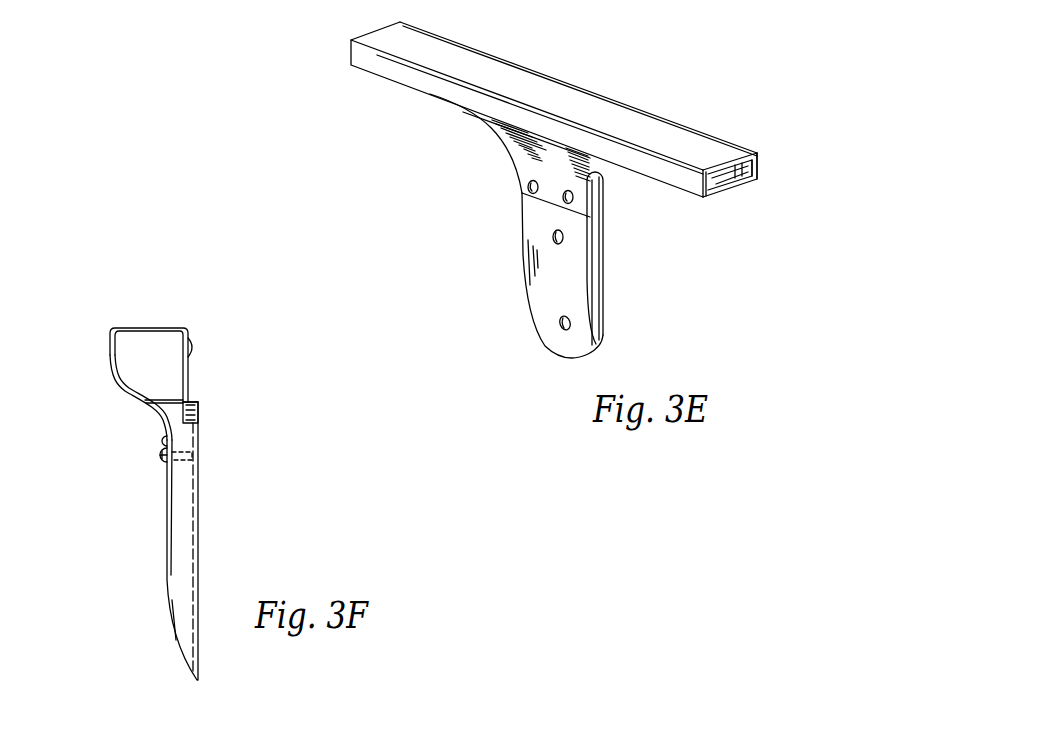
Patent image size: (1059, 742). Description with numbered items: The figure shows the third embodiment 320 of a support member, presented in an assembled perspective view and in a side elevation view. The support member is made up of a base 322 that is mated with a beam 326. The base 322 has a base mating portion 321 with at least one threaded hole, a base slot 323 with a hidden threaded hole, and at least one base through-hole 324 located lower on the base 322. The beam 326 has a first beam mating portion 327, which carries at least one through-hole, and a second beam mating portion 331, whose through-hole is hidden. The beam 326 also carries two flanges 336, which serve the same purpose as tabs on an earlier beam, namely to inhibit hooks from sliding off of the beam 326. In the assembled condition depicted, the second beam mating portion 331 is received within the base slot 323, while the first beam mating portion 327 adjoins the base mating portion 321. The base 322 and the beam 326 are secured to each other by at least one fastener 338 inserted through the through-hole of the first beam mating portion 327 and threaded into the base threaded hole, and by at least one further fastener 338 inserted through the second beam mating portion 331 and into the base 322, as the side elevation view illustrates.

In FIG. 3E, the third embodiment of a support member 320 is at (386, 153).
In FIG. 3F, the base mating portion 321 is at (174, 447).
In FIG. 3E, the base 322 is at (605, 272).
In FIG. 3F, the base 322 is at (199, 537).
In FIG. 3E, the base slot 323 is at (601, 212).
In FIG. 3F, the base slot 323 is at (199, 418).
In FIG. 3E, the base through-hole 324 is at (571, 318).
In FIG. 3E, the beam 326 is at (570, 90).
In FIG. 3F, the beam 326 is at (110, 352).
In FIG. 3E, the first beam mating portion 327 is at (527, 162).
In FIG. 3F, the first beam mating portion 327 is at (160, 418).
In FIG. 3E, the second beam mating portion 331 is at (602, 176).
In FIG. 3F, the second beam mating portion 331 is at (199, 402).
In FIG. 3E, the flanges 336 is at (760, 172).
In FIG. 3F, the flanges 336 is at (194, 348).
In FIG. 3E, the fastener 338 is at (568, 205).
In FIG. 3F, the fastener 338 is at (199, 408).